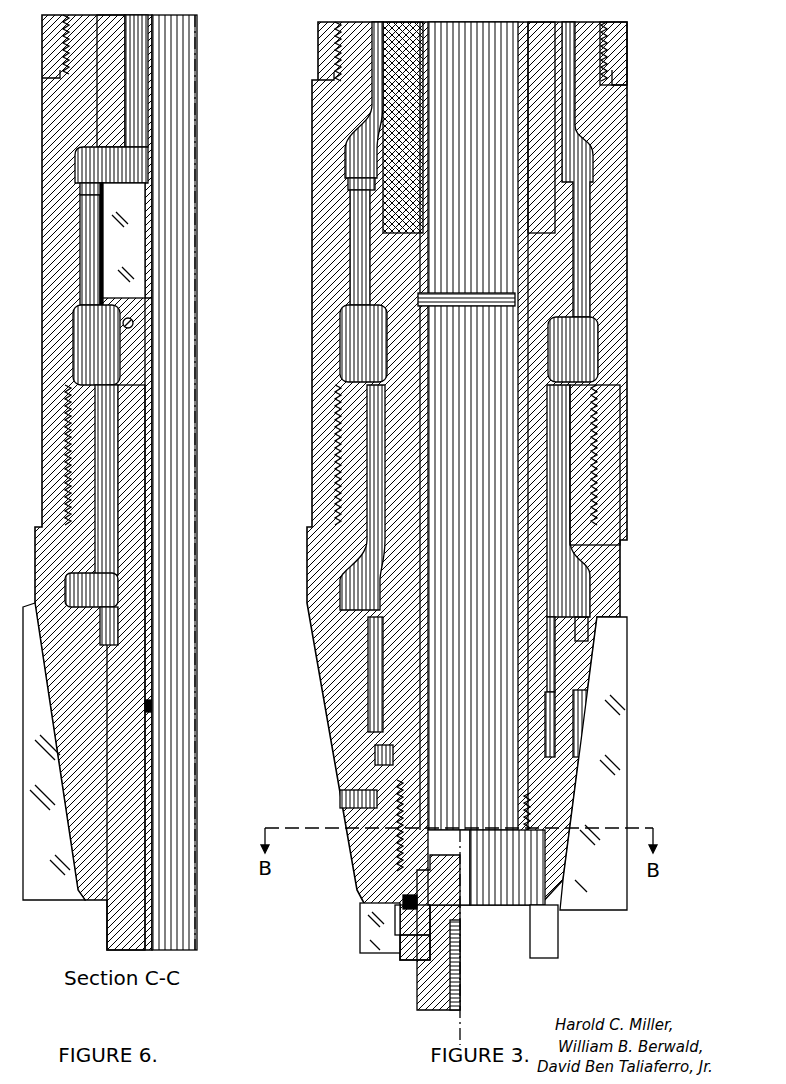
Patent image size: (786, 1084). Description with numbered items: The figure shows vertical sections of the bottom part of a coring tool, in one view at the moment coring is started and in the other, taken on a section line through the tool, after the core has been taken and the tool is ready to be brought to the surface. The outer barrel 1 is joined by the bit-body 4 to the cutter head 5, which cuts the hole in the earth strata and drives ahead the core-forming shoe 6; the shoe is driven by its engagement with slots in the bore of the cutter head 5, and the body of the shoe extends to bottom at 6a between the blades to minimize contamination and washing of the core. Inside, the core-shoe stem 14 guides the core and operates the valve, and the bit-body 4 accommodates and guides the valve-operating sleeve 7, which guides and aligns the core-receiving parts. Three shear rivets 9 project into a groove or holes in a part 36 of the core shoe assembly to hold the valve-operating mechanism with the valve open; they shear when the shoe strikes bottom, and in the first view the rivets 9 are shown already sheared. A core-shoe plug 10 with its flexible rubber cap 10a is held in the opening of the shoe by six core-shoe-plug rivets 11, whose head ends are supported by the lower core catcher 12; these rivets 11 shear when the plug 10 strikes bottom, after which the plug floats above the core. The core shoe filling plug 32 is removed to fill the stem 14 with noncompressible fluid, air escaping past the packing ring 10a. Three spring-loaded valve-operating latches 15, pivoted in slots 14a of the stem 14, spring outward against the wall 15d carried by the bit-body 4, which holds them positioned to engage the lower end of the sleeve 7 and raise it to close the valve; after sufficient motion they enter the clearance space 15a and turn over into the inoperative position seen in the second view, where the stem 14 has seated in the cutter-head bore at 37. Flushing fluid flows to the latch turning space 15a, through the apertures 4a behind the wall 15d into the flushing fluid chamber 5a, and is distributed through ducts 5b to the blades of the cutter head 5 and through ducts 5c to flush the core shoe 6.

In FIG. 3, the outer barrel 1 is at (617, 55).
In FIG. 6, the bit-body 4 is at (55, 237).
In FIG. 3, the bit-body 4 is at (337, 198).
In FIG. 6, the apertures 4a is at (86, 195).
In FIG. 3, the apertures 4a is at (355, 195).
In FIG. 3, the cutter head 5 is at (583, 485).
In FIG. 6, the flushing fluid chamber 5a is at (100, 578).
In FIG. 3, the flushing fluid chamber 5a is at (262, 560).
In FIG. 3, the ducts 5b is at (588, 617).
In FIG. 3, the ducts 5c is at (551, 647).
In FIG. 3, the core-forming shoe 6 is at (540, 807).
In FIG. 3, the bottom extension of core shoe body 6a is at (423, 955).
In FIG. 6, the valve-operating sleeve 7 is at (113, 106).
In FIG. 3, the valve-operating sleeve 7 is at (388, 97).
In FIG. 3, the shear rivets 9 is at (380, 755).
In FIG. 3, the core-shoe plug 10 is at (420, 946).
In FIG. 3, the flexible cap 10a is at (415, 922).
In FIG. 3, the core-shoe-plug rivets 11 is at (403, 903).
In FIG. 3, the lower core catcher 12 is at (515, 898).
In FIG. 6, the core-shoe stem 14 is at (130, 478).
In FIG. 3, the core-shoe stem 14 is at (520, 685).
In FIG. 6, the slots 14a is at (133, 248).
In FIG. 6, the valve-operating latches 15 is at (128, 353).
In FIG. 3, the valve-operating latches 15 is at (385, 300).
In FIG. 6, the clearance space 15a is at (86, 167).
In FIG. 3, the clearance space 15a is at (372, 160).
In FIG. 6, the wall 15d is at (100, 277).
In FIG. 3, the wall 15d is at (370, 268).
In FIG. 3, the core shoe filling plug 32 is at (447, 1018).
In FIG. 3, the part of core shoe assembly 36 is at (550, 725).
In FIG. 6, the seat in cutter-head bore 37 is at (150, 706).